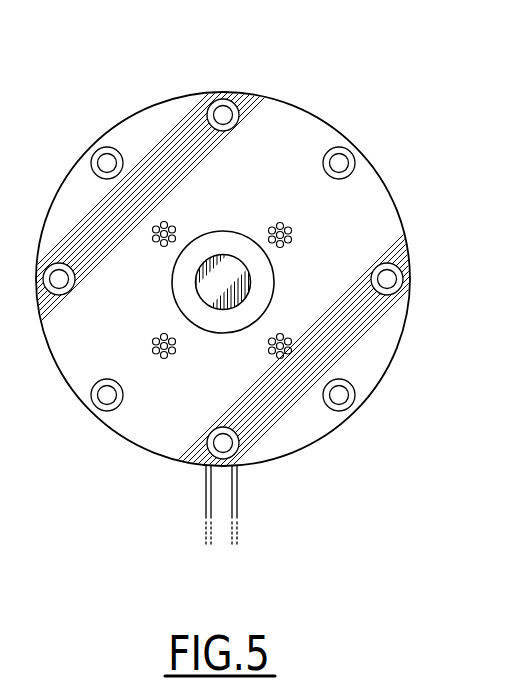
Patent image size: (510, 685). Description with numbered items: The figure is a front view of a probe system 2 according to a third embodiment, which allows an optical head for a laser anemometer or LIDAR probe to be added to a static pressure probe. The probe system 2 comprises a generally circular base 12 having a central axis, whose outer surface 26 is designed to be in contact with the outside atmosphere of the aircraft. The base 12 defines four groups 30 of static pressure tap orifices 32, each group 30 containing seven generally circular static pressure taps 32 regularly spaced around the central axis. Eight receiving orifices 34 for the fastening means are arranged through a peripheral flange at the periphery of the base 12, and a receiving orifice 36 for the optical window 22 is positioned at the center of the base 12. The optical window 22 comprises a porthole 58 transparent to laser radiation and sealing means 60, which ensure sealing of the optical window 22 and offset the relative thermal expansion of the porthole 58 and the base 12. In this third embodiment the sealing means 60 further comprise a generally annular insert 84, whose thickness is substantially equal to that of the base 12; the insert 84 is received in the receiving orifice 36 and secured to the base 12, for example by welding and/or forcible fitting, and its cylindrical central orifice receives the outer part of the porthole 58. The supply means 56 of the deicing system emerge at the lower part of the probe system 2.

The probe system 2 is at (100, 462).
The base 12 is at (94, 112).
The optical window 22 is at (213, 287).
The outer surface 26 is at (281, 123).
The groups of static pressure tap orifices 30 is at (306, 228).
The static pressure tap orifices 32 is at (280, 223).
The receiving orifices 34 is at (222, 112).
The receiving orifice 36 is at (227, 268).
The supply means 56 is at (205, 498).
The porthole 58 is at (222, 305).
The sealing means 60 is at (241, 240).
The insert 84 is at (259, 266).